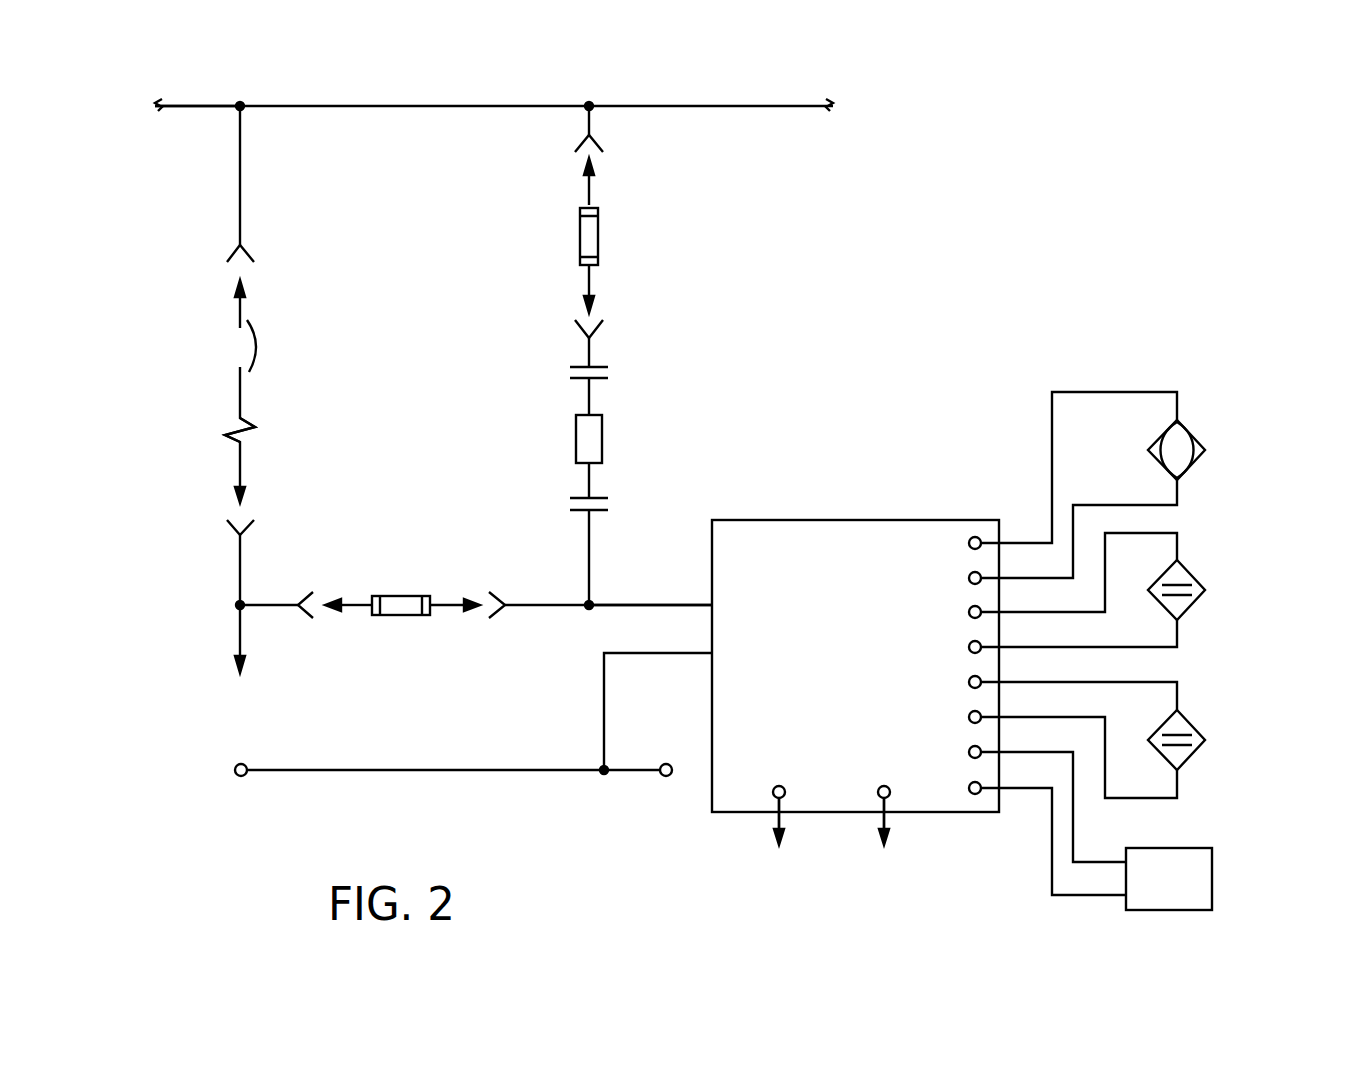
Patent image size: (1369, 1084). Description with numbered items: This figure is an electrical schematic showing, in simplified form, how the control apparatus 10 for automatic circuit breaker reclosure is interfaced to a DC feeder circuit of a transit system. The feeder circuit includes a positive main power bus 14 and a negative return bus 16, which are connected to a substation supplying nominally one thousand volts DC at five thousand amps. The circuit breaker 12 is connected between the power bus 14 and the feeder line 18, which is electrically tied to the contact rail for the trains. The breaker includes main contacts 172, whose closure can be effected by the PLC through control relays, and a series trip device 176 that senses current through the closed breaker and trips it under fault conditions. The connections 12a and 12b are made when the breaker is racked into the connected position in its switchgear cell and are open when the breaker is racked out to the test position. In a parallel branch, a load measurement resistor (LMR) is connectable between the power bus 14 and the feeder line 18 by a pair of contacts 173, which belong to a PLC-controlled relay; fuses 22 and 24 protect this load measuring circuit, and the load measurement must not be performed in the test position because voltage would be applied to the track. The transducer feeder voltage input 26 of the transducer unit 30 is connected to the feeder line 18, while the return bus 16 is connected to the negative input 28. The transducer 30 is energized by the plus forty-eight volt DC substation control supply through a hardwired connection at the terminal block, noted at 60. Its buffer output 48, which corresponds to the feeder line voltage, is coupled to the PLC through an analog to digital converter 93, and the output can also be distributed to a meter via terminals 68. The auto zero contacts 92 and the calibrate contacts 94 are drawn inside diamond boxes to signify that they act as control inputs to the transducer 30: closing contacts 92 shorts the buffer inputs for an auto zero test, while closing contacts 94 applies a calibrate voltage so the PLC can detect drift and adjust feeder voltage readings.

The apparatus 10 is at (888, 274).
The circuit breaker 12 is at (193, 240).
The connection 12a is at (252, 272).
The connection 12b is at (255, 505).
The main power bus 14 is at (192, 104).
The return bus 16 is at (262, 778).
The feeder line 18 is at (240, 645).
The fuse 22 is at (600, 237).
The fuse 24 is at (407, 594).
The transducer feeder voltage input 26 is at (677, 597).
The negative input 28 is at (692, 662).
The transducer unit 30 is at (853, 518).
The buffer output 48 is at (1025, 528).
The terminal block connection 60 is at (816, 883).
The terminals 68 is at (1212, 878).
The auto zero control contacts 92 is at (1192, 607).
The analog to digital converter 93 is at (1195, 435).
The calibrate control contacts 94 is at (1192, 757).
The main contacts 172 is at (260, 349).
The contacts 173 is at (606, 374).
The series trip device 176 is at (253, 428).